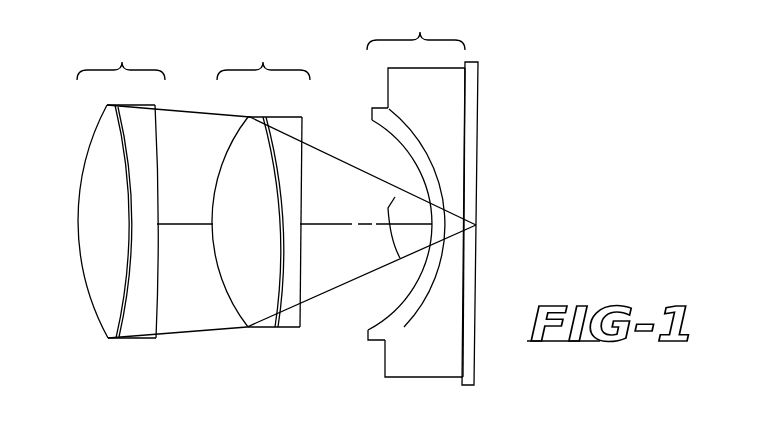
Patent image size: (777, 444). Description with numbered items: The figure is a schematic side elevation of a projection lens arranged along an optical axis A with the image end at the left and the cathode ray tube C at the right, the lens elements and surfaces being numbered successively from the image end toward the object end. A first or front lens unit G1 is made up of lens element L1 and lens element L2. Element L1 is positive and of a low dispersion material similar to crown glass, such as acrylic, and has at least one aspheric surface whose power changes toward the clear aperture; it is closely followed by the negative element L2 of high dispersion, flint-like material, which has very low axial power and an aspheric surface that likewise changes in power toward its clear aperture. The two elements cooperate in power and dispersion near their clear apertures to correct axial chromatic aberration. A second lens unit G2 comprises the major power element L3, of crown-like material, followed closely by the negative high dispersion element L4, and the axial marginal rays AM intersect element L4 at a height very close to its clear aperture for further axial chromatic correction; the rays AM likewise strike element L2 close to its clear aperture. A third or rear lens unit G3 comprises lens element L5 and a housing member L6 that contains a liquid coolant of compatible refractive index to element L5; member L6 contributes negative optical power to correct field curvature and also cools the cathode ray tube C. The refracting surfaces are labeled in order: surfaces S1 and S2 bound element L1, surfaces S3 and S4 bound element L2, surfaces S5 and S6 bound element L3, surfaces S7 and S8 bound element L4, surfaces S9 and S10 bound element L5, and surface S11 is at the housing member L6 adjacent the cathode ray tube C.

The first lens unit G1 is at (97, 218).
The second lens unit G2 is at (259, 209).
The third lens unit G3 is at (393, 217).
The first lens element L1 is at (81, 225).
The second lens element L2 is at (115, 239).
The third lens element L3 is at (228, 233).
The fourth lens element L4 is at (303, 229).
The fifth lens element L5 is at (383, 266).
The housing member L6 is at (405, 245).
The cathode ray tube C is at (475, 118).
The optical axis A is at (322, 223).
The axial marginal rays AM is at (377, 227).
The first lens surface S1 is at (85, 282).
The second lens surface S2 is at (130, 257).
The third lens surface S3 is at (118, 305).
The fourth lens surface S4 is at (158, 305).
The fifth lens surface S5 is at (224, 285).
The sixth lens surface S6 is at (270, 302).
The seventh lens surface S7 is at (268, 297).
The eighth lens surface S8 is at (302, 318).
The ninth lens surface S9 is at (398, 308).
The tenth lens surface S10 is at (404, 327).
The eleventh lens surface S11 is at (462, 332).